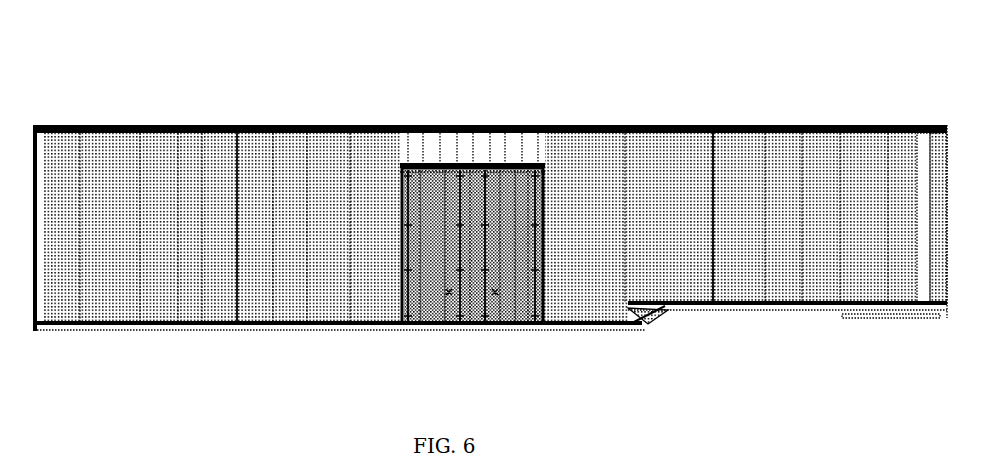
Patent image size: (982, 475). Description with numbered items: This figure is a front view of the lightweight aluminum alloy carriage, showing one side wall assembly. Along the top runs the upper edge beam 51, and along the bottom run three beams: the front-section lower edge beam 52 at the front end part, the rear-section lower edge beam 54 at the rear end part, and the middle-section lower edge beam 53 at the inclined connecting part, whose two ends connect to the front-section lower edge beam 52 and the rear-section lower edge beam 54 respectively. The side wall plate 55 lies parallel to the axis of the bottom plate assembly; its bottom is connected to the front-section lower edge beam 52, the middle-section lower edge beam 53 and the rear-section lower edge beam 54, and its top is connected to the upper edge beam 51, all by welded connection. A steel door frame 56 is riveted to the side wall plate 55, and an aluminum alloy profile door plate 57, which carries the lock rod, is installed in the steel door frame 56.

The upper edge beam 51 is at (790, 125).
The front-section lower edge beam 52 is at (762, 309).
The middle-section lower edge beam 53 is at (654, 315).
The rear-section lower edge beam 54 is at (256, 329).
The side wall plate 55 is at (244, 143).
The steel door frame 56 is at (527, 164).
The aluminum alloy profile door plate 57 is at (424, 172).